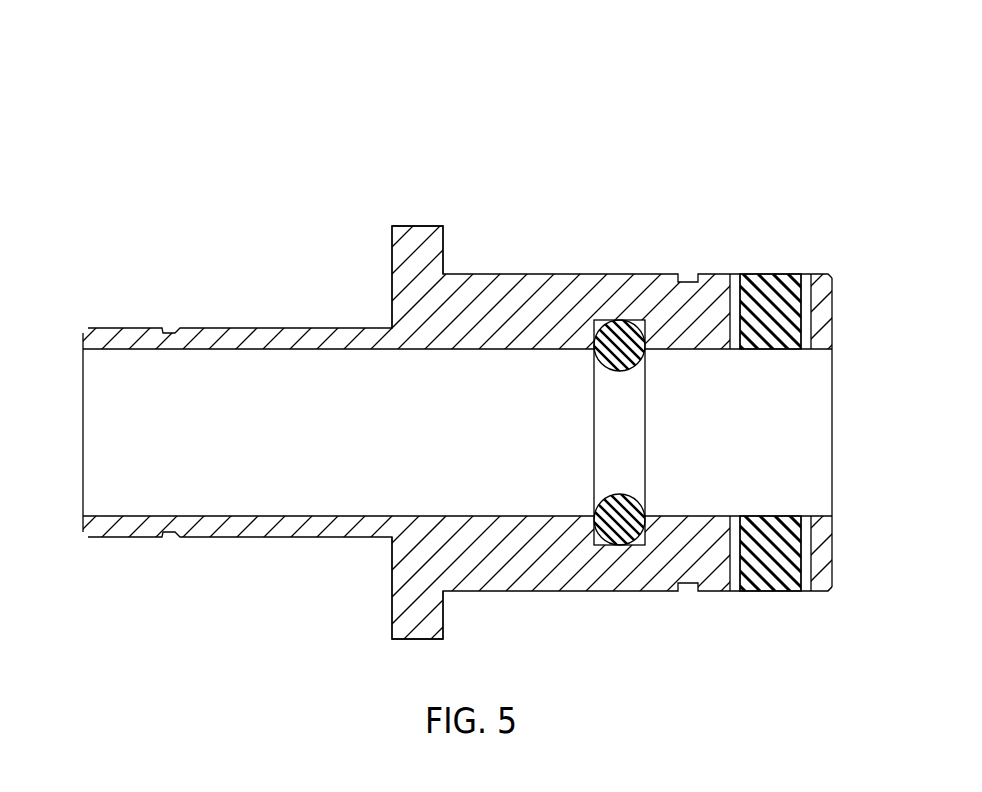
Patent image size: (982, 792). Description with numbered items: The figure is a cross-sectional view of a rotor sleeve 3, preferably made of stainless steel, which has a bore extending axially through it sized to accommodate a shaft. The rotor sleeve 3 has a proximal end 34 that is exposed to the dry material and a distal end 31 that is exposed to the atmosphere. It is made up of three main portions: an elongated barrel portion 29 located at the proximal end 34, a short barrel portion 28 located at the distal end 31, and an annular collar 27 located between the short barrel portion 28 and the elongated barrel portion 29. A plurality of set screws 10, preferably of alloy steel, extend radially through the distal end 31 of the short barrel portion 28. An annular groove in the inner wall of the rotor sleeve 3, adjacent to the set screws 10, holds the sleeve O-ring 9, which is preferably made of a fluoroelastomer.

The rotor sleeve 3 is at (491, 371).
The annular collar 27 is at (414, 232).
The short barrel portion 28 is at (566, 291).
The elongated barrel portion 29 is at (310, 338).
The sleeve O-ring 9 is at (614, 322).
The set screws 10 is at (778, 283).
The proximal end 34 is at (82, 423).
The distal end 31 is at (833, 431).